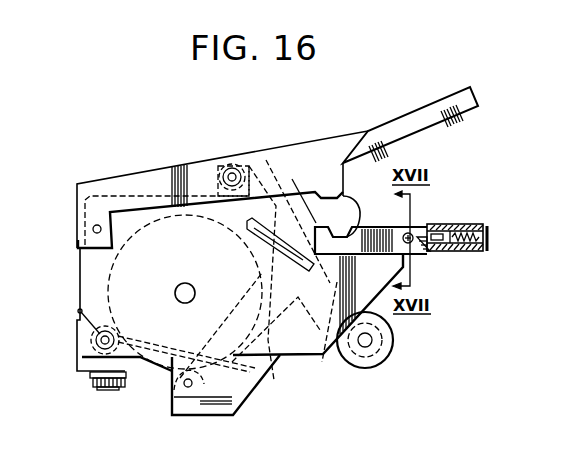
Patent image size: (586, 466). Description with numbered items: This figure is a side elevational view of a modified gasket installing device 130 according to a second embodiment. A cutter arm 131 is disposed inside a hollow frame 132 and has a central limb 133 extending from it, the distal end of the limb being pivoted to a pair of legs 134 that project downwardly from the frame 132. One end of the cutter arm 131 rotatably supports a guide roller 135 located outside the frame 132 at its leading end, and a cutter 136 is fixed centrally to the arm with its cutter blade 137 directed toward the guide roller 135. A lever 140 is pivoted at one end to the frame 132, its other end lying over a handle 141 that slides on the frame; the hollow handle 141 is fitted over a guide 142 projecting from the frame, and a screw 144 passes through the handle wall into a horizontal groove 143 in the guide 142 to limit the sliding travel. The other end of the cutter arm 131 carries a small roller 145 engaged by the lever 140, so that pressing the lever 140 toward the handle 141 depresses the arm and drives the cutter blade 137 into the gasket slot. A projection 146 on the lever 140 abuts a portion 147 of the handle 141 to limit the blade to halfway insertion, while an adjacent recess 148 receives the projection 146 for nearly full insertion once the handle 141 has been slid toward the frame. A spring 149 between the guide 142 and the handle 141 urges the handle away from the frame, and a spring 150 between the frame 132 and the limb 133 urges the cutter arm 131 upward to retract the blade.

The gasket installing device 130 is at (91, 177).
The cutter arm 131 is at (318, 325).
The hollow frame 132 is at (90, 266).
The central limb 133 is at (255, 281).
The legs 134 is at (202, 407).
The guide roller 135 is at (393, 344).
The cutter 136 is at (252, 248).
The cutter blade 137 is at (262, 273).
The lever 140 is at (306, 143).
The handle 141 is at (486, 226).
The guide 142 is at (446, 228).
The horizontal groove 143 is at (433, 242).
The screw 144 is at (412, 233).
The small roller 145 is at (221, 169).
The projection 146 is at (344, 183).
The handle portion 147 is at (281, 214).
The recess 148 is at (364, 210).
The spring 149 is at (488, 250).
The spring 150 is at (118, 337).